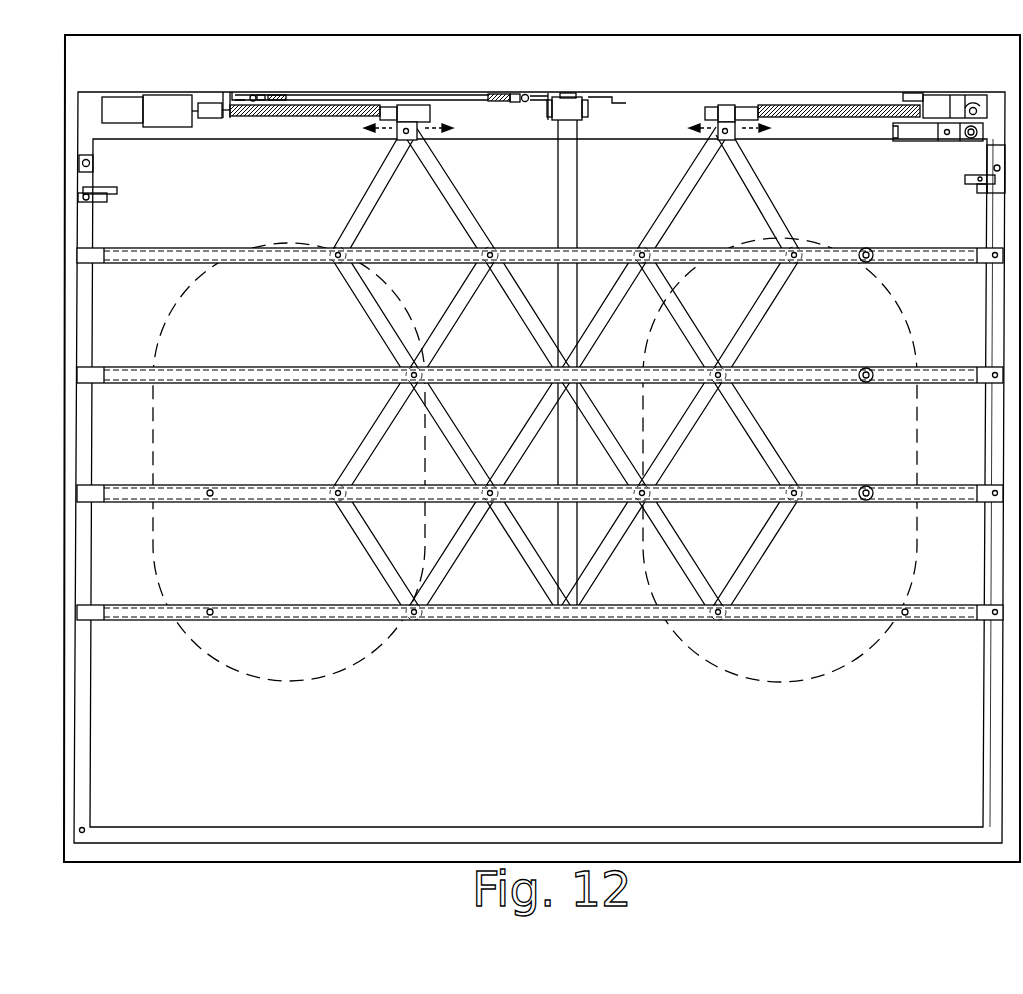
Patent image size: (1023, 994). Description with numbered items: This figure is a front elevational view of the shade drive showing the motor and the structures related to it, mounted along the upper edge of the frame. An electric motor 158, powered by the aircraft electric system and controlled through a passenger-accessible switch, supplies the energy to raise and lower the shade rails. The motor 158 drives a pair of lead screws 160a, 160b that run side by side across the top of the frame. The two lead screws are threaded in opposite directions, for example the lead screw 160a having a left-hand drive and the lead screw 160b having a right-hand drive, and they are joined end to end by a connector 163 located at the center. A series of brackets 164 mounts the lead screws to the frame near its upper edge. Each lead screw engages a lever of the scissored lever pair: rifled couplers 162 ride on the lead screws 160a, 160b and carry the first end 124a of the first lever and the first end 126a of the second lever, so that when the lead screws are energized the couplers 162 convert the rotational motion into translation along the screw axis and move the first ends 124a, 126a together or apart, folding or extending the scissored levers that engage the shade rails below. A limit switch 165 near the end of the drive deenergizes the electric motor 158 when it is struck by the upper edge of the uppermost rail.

The electric motor 158 is at (172, 124).
The lead screw 160a is at (265, 114).
The lead screw 160b is at (812, 106).
The rifled coupler 162 is at (409, 106).
The connector 163 is at (566, 96).
The bracket 164 is at (233, 92).
The limit switch 165 is at (970, 141).
The first end of first lever 124a is at (404, 142).
The first end of second lever 126a is at (724, 142).